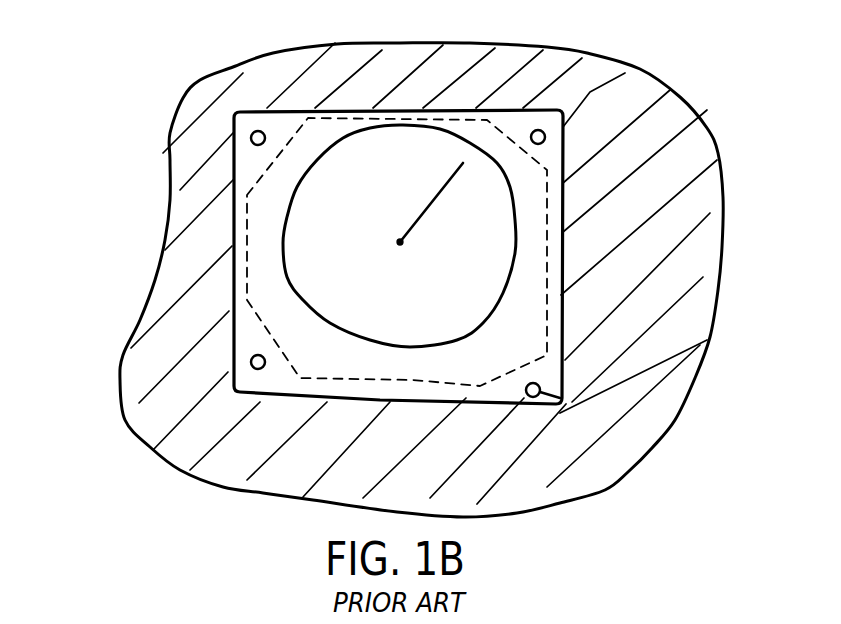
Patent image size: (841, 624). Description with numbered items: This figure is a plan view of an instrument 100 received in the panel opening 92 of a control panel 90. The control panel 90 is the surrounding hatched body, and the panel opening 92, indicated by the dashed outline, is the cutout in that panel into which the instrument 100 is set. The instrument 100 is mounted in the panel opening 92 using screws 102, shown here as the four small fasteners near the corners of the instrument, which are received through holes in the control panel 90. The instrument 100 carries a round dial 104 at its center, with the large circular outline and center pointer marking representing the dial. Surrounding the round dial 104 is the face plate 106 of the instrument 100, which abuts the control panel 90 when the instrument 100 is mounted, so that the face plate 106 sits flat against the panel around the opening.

The control panel 90 is at (612, 476).
The panel opening 92 is at (243, 257).
The instrument 100 is at (586, 262).
The screws 102 is at (247, 130).
The round dial 104 is at (552, 236).
The face plate 106 is at (340, 403).